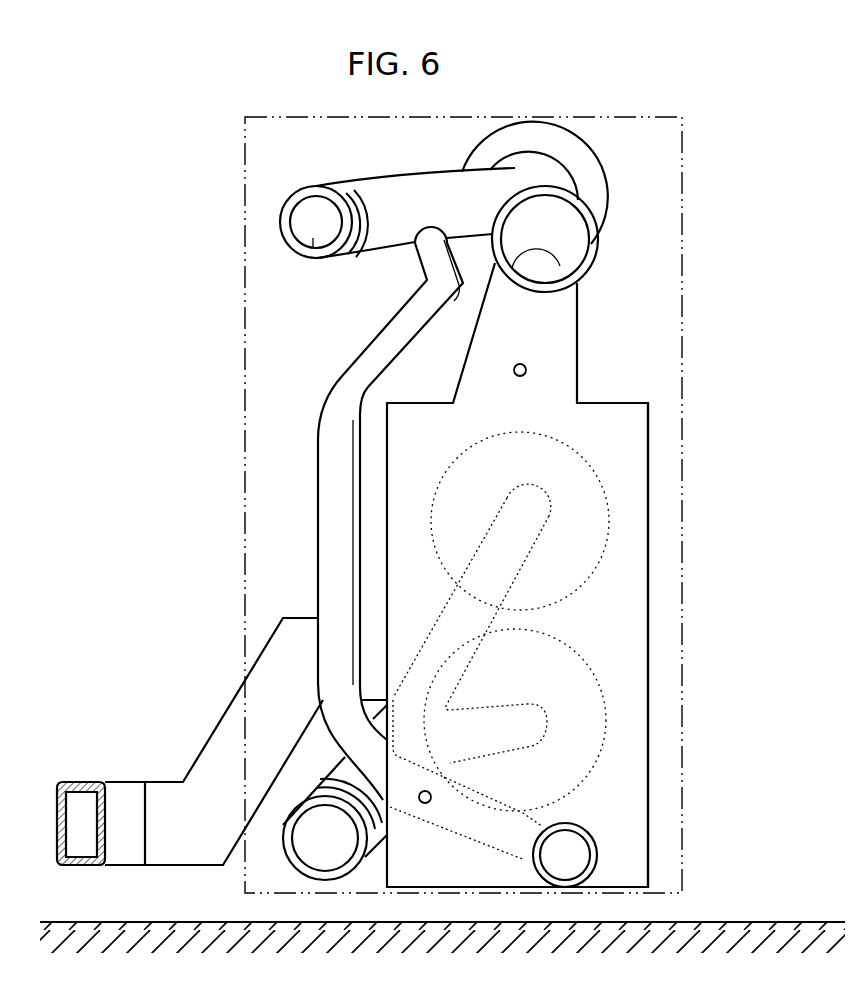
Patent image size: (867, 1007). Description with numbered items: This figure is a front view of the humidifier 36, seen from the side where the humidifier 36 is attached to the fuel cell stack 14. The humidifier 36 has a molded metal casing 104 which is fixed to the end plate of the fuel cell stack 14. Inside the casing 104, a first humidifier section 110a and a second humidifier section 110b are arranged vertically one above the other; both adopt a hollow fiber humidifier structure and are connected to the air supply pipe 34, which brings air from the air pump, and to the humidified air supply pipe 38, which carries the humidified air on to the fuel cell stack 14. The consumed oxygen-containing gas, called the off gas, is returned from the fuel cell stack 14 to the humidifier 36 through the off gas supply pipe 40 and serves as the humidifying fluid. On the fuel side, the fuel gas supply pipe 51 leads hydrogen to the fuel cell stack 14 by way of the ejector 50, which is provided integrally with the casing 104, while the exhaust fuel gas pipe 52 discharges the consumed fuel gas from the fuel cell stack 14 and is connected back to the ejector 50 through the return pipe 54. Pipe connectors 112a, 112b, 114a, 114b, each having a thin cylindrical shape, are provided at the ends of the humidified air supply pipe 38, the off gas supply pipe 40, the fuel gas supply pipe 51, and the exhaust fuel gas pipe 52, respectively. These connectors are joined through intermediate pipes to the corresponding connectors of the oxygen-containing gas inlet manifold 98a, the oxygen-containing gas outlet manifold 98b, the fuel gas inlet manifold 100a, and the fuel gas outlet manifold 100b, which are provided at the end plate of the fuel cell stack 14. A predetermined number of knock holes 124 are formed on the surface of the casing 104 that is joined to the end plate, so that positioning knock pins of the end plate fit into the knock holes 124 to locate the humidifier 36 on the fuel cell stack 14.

The fuel cell stack 14 is at (241, 355).
The humidifier 36 is at (141, 169).
The air supply pipe 34 is at (85, 783).
The humidified air supply pipe 38 is at (544, 312).
The off gas supply pipe 40 is at (350, 778).
The ejector 50 is at (585, 176).
The fuel gas supply pipe 51 is at (377, 200).
The exhaust fuel gas pipe 52 is at (471, 672).
The return pipe 54 is at (340, 385).
The oxygen-containing gas inlet manifold 98a is at (576, 256).
The oxygen-containing gas outlet manifold 98b is at (347, 852).
The fuel gas inlet manifold 100a is at (307, 258).
The fuel gas outlet manifold 100b is at (578, 830).
The casing 104 is at (655, 423).
The first humidifier section 110a is at (563, 553).
The second humidifier section 110b is at (560, 702).
The pipe connector 112a is at (598, 232).
The pipe connector 112b is at (287, 833).
The pipe connector 114a is at (305, 193).
The pipe connector 114b is at (612, 838).
The knock holes 124 is at (521, 377).